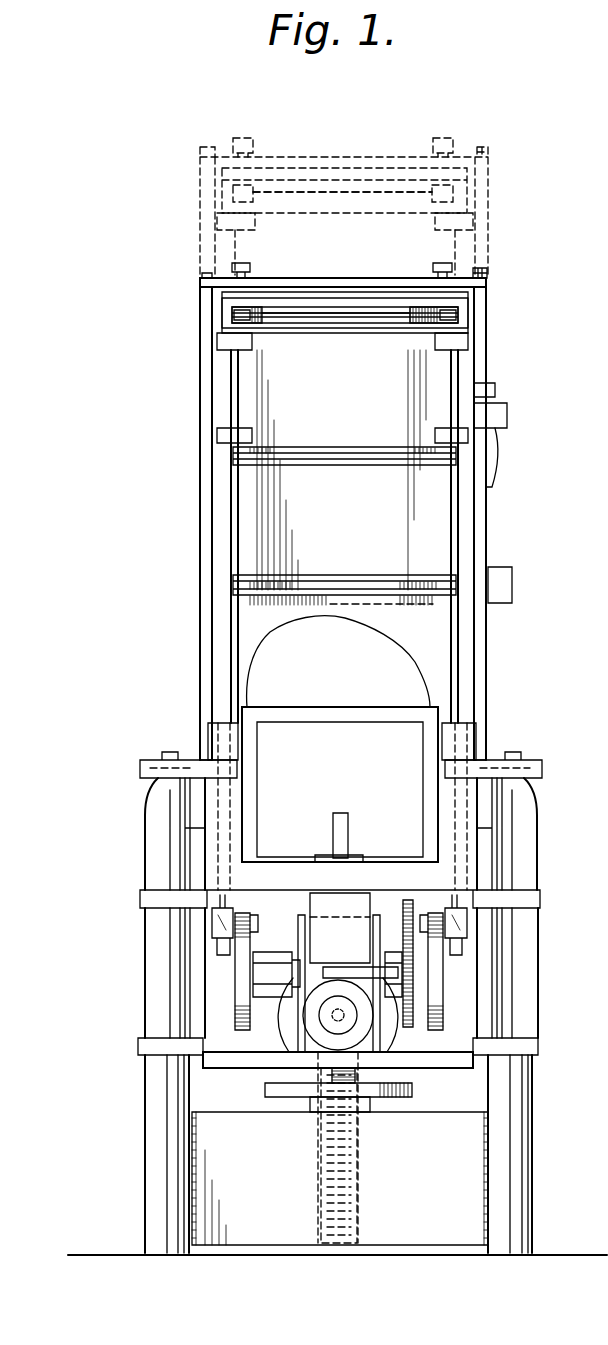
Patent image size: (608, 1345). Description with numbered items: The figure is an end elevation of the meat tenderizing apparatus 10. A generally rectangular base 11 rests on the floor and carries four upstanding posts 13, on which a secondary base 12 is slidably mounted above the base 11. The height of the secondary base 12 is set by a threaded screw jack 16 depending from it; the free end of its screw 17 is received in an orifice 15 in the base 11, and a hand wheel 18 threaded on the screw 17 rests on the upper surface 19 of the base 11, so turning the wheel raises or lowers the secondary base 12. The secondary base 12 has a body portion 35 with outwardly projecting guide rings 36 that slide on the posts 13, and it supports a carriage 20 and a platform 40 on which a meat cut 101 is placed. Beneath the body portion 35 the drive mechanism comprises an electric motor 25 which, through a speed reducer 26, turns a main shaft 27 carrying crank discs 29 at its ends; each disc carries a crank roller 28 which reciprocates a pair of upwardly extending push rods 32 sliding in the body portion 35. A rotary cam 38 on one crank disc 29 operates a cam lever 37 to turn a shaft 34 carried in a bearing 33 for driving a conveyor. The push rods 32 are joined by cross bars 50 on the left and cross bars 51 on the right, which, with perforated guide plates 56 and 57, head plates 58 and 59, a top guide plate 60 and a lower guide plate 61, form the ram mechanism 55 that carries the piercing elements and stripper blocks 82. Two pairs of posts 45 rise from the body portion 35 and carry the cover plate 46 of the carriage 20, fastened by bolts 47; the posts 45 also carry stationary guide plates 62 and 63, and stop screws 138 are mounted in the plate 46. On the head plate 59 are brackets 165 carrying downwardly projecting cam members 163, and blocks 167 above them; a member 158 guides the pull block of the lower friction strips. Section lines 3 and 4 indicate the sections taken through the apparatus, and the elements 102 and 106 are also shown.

The meat tenderizing apparatus 10 is at (160, 160).
The base 11 is at (132, 1233).
The secondary base 12 is at (230, 1060).
The posts 13 is at (152, 1186).
The orifice 15 is at (322, 1172).
The threaded screw jack 16 is at (354, 1133).
The screw 17 is at (358, 1068).
The hand wheel 18 is at (262, 1095).
The upper surface 19 is at (272, 1105).
The carriage 20 is at (200, 659).
The electric motor 25 is at (390, 1040).
The speed reducer 26 is at (312, 1032).
The main shaft 27 is at (258, 968).
The crank roller 28 is at (222, 925).
The crank discs 29 is at (238, 1015).
The push rods 32 is at (236, 645).
The bearing 33 is at (322, 900).
The shaft 34 is at (338, 812).
The body portion 35 is at (218, 852).
The guide rings 36 is at (150, 898).
The cam lever 37 is at (342, 967).
The rotary cam 38 is at (380, 920).
The platform 40 is at (345, 715).
The posts 45 is at (205, 385).
The cover plate 46 is at (275, 168).
The bolts 47 is at (203, 148).
The cross bars 50 is at (218, 222).
The cross bars 51 is at (472, 222).
The ram mechanism 55 is at (200, 499).
The perforated guide plate 56 is at (318, 335).
The second perforated guide plate 57 is at (338, 447).
The head plate 58 is at (225, 318).
The head plate 59 is at (465, 318).
The perforated top guide plate 60 is at (318, 178).
The third perforated guide plate 61 is at (318, 462).
The guide plate 62 is at (358, 580).
The guide plate 63 is at (385, 574).
The stripper blocks 82 is at (392, 602).
The meat cut 101 is at (265, 680).
The rod 102 is at (368, 192).
The nut 106 is at (241, 137).
The stop screws 138 is at (484, 147).
The member 158 is at (500, 567).
The cam members 163 is at (498, 470).
The bracket 165 is at (507, 412).
The blocks 167 is at (497, 390).
The section line 3- 3 is at (607, 872).
The section line 4- 4 is at (607, 687).